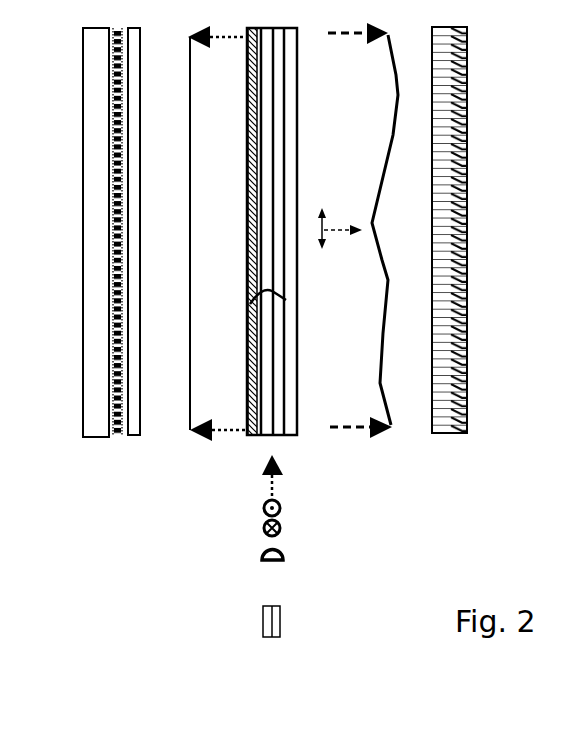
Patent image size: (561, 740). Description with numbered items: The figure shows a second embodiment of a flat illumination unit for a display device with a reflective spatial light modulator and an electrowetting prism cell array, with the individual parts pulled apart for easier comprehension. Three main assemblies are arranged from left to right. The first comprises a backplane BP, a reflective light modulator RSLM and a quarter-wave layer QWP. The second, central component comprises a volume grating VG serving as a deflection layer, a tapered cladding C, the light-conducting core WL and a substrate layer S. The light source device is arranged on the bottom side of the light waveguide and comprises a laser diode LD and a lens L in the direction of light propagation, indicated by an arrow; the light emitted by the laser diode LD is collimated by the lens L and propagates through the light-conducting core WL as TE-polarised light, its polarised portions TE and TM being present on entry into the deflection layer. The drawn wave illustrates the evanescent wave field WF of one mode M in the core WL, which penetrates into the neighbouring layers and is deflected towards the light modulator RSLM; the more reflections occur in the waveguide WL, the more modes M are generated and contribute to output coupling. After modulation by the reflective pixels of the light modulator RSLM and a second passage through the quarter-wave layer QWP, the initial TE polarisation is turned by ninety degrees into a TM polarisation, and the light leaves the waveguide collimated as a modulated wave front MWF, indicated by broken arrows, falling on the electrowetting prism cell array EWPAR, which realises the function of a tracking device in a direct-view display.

The backplane BP is at (80, 91).
The reflective light modulator RSLM is at (117, 437).
The λ/4 layer QWP is at (134, 437).
The wave field WF is at (188, 417).
The volume grating VG is at (246, 83).
The substrate layer S is at (252, 231).
The light-conducting core WL is at (277, 330).
The mode M is at (287, 300).
The tapered cladding C is at (266, 424).
The TE polarisation TE is at (282, 518).
The lens L is at (261, 553).
The laser diode LD is at (283, 617).
The TM polarisation TM is at (352, 218).
The modulated wave front MWF is at (403, 404).
The electrowetting prism cell array EWPAR is at (470, 423).